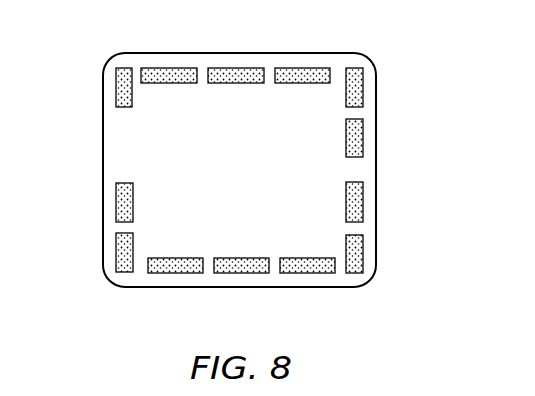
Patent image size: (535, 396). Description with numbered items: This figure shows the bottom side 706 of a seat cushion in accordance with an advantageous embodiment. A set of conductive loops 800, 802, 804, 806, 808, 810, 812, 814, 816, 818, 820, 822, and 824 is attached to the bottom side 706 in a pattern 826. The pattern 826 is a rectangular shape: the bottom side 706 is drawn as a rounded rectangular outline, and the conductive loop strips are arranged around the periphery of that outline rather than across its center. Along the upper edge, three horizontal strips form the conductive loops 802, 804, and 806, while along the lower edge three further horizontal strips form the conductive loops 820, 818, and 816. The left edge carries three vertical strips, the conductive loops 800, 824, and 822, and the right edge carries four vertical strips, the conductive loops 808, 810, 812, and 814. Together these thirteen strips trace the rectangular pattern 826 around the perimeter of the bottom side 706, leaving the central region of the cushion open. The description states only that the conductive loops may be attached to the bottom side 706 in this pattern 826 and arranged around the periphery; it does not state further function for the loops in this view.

The bottom side 706 is at (258, 184).
The conductive loop 800 is at (116, 89).
The conductive loop 802 is at (166, 68).
The conductive loop 804 is at (237, 68).
The conductive loop 806 is at (303, 68).
The conductive loop 808 is at (363, 88).
The conductive loop 810 is at (363, 139).
The conductive loop 812 is at (363, 200).
The conductive loop 814 is at (363, 252).
The conductive loop 816 is at (313, 273).
The conductive loop 818 is at (245, 273).
The conductive loop 820 is at (174, 273).
The conductive loop 822 is at (116, 252).
The conductive loop 824 is at (116, 200).
The pattern 826 is at (132, 57).